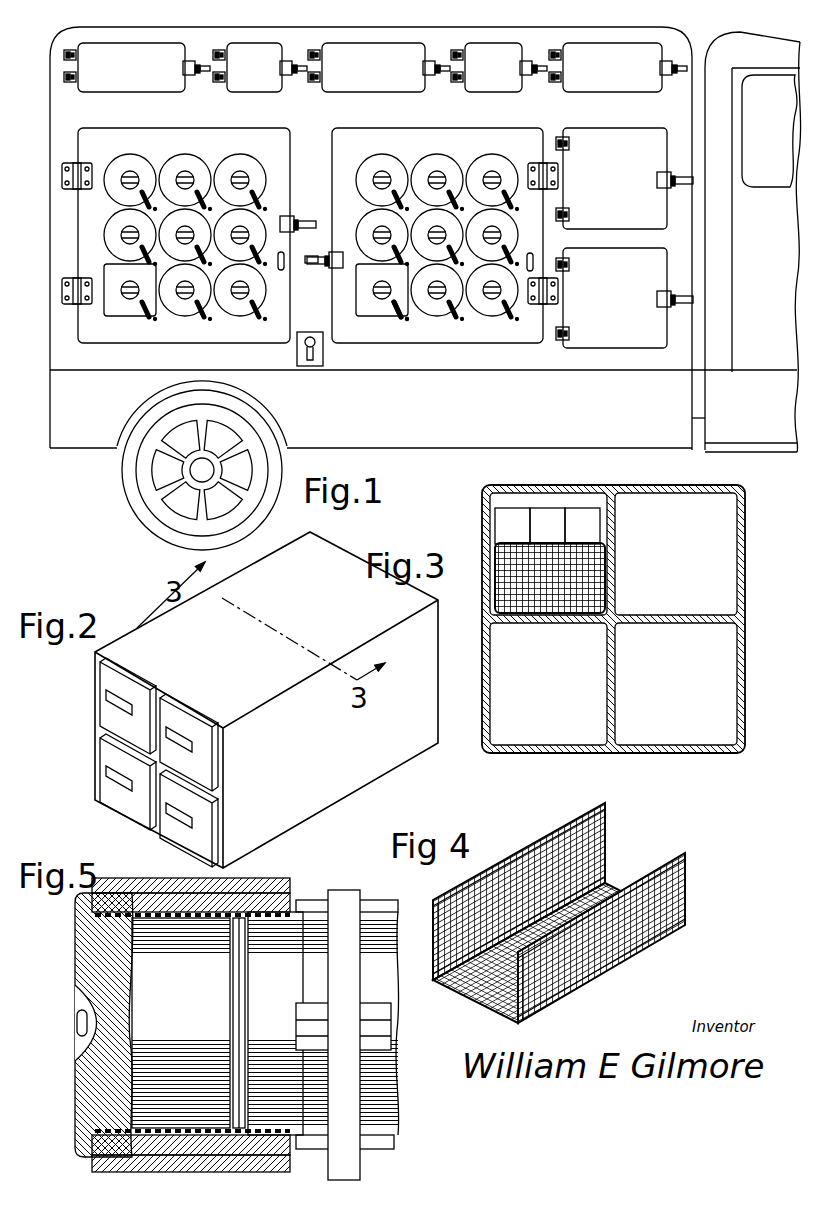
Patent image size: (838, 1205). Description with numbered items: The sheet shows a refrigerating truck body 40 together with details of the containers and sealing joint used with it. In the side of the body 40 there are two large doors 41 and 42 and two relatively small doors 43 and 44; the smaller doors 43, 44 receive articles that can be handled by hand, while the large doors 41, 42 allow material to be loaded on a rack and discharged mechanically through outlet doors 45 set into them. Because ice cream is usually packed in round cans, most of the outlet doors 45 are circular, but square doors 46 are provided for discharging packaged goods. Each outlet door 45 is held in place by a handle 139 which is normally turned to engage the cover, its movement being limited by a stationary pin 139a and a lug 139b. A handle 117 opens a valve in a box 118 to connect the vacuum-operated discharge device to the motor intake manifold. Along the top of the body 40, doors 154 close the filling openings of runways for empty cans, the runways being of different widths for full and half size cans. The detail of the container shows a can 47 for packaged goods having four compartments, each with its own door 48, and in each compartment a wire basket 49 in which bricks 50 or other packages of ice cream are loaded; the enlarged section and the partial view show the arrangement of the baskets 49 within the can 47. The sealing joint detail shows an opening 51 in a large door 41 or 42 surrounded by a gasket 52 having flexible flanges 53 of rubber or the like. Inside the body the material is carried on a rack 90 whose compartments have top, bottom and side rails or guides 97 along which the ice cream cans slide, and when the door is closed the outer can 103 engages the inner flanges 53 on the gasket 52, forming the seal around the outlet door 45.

In FIG. 1, the body 40 is at (678, 52).
In FIG. 1, the large door 41 is at (100, 336).
In FIG. 5, the large door 41 is at (92, 1160).
In FIG. 1, the large door 42 is at (474, 332).
In FIG. 1, the small door 43 is at (623, 146).
In FIG. 1, the small door 44 is at (648, 332).
In FIG. 1, the outlet door 45 is at (170, 166).
In FIG. 5, the outlet door 45 is at (72, 958).
In FIG. 1, the square door 46 is at (152, 308).
In FIG. 2, the can 47 is at (375, 763).
In FIG. 3, the can 47 is at (572, 754).
In FIG. 2, the door 48 is at (100, 717).
In FIG. 3, the wire basket 49 is at (602, 575).
In FIG. 4, the wire basket 49 is at (638, 953).
In FIG. 3, the bricks 50 is at (507, 522).
In FIG. 5, the opening 51 is at (110, 912).
In FIG. 5, the gasket 52 is at (240, 915).
In FIG. 5, the flexible flange 53 is at (152, 905).
In FIG. 5, the rack 90 is at (350, 1098).
In FIG. 5, the rails or guides 97 is at (388, 903).
In FIG. 5, the ice cream can 103 is at (283, 932).
In FIG. 1, the handle 117 is at (312, 368).
In FIG. 1, the box 118 is at (297, 362).
In FIG. 1, the handle 139 is at (244, 320).
In FIG. 1, the stationary pin 139a is at (393, 322).
In FIG. 1, the lug 139b is at (406, 322).
In FIG. 1, the door 154 is at (394, 57).